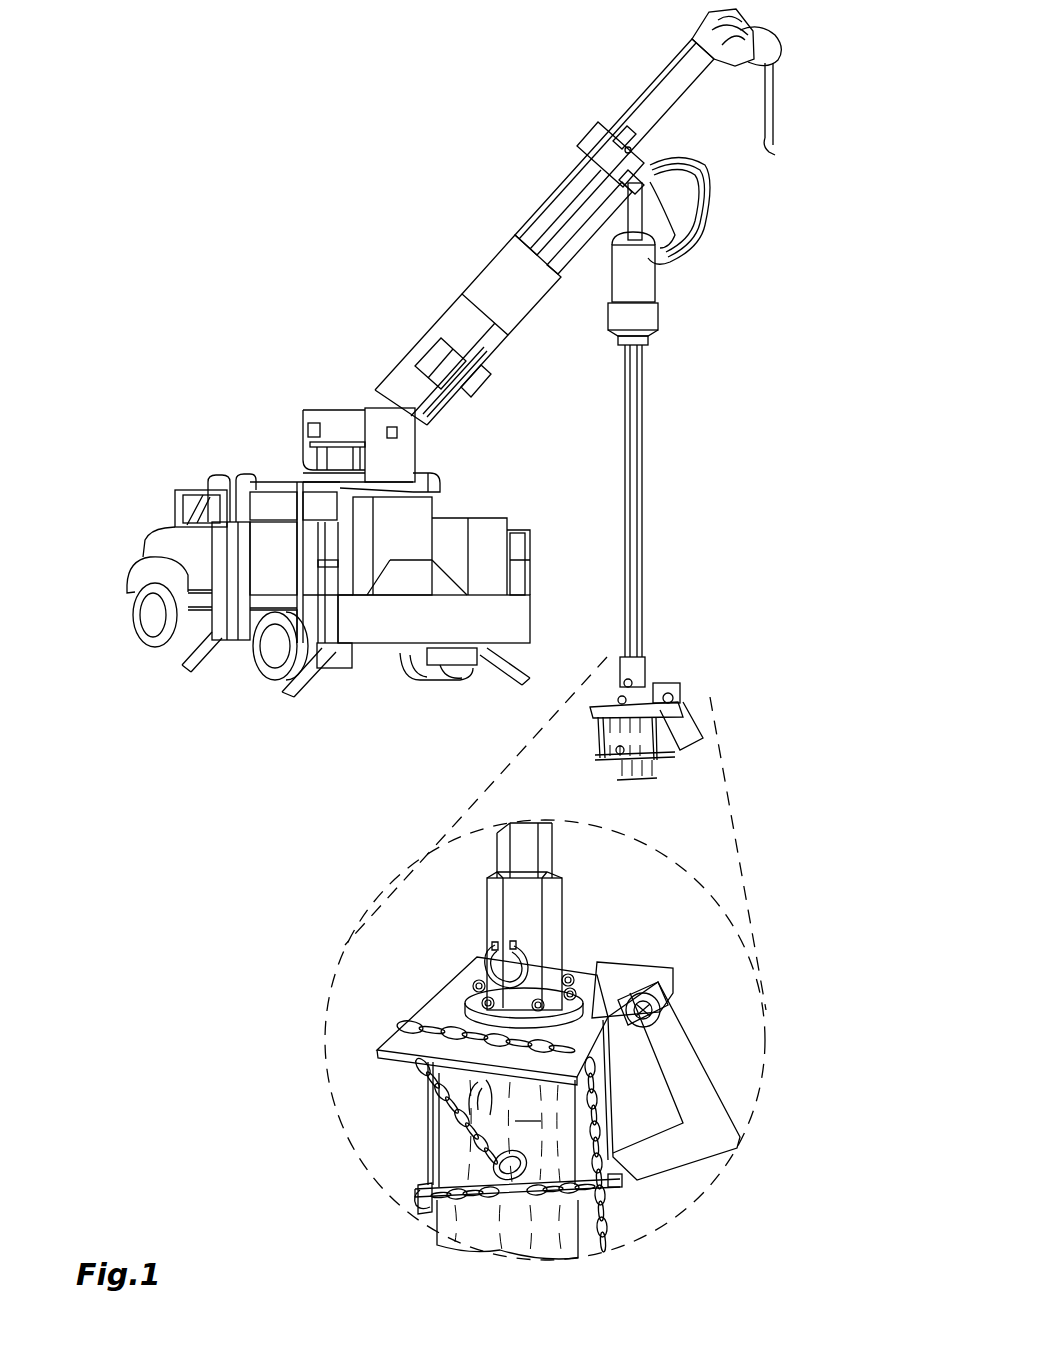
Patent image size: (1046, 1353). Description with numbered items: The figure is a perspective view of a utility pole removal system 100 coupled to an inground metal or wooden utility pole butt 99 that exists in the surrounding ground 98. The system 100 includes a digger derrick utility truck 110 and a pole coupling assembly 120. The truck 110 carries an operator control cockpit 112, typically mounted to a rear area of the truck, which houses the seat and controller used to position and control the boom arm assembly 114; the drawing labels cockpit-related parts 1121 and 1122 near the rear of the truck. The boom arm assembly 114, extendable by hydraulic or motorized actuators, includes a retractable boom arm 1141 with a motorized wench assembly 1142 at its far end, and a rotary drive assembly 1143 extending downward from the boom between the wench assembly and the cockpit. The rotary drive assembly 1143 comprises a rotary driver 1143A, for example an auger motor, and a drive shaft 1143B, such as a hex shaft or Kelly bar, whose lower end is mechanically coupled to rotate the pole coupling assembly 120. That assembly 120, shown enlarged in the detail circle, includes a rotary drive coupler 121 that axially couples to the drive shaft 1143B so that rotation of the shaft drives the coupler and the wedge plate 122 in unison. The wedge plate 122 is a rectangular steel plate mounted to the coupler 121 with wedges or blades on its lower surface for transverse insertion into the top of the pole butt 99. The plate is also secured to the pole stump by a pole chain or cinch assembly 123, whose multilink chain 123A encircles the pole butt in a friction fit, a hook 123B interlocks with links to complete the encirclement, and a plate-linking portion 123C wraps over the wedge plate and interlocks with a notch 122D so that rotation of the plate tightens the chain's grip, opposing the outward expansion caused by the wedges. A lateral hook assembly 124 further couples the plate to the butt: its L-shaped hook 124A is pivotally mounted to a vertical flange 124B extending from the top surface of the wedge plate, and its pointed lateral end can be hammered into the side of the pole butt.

The utility pole removal system 100 is at (238, 160).
The digger derrick utility truck 110 is at (150, 432).
The operator control cockpit 112 is at (318, 405).
The operator platform 1121 is at (343, 407).
The boom pedestal 1122 is at (388, 407).
The boom arm assembly 114 is at (617, 331).
The retractable boom arm 1141 is at (490, 250).
The motorized wench assembly 1142 is at (770, 37).
The rotary drive assembly 1143 is at (697, 420).
The rotary driver 1143A is at (650, 318).
The drive shaft 1143B is at (640, 440).
The pole coupling assembly 120 is at (682, 676).
The utility pole butt 99 is at (603, 740).
The surrounding ground 98 is at (633, 768).
The rotary drive coupler 121 is at (563, 907).
The wedge plate 122 is at (446, 1004).
The notch 122D is at (407, 1033).
The pole chain assembly 123 is at (467, 1157).
The multilink chain 123A is at (418, 1210).
The hook 123B is at (498, 1183).
The plate-linking portion 123C is at (432, 1133).
The lateral hook assembly 124 is at (678, 1046).
The L-shaped hook 124A is at (683, 1035).
The vertical flange 124B is at (672, 978).